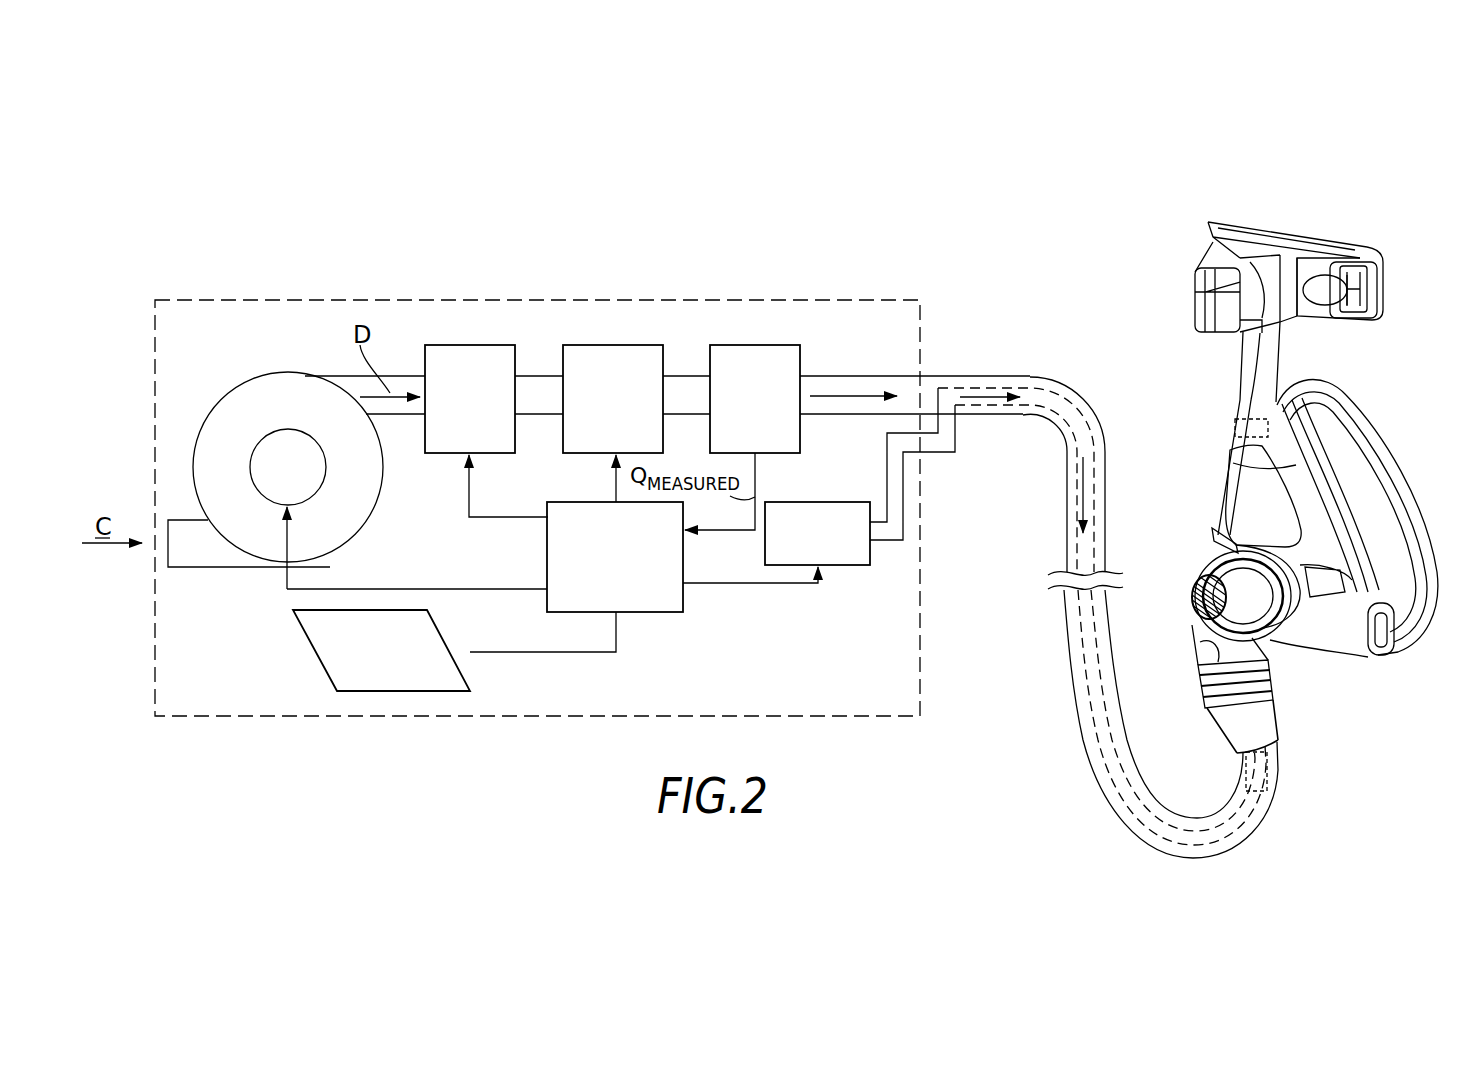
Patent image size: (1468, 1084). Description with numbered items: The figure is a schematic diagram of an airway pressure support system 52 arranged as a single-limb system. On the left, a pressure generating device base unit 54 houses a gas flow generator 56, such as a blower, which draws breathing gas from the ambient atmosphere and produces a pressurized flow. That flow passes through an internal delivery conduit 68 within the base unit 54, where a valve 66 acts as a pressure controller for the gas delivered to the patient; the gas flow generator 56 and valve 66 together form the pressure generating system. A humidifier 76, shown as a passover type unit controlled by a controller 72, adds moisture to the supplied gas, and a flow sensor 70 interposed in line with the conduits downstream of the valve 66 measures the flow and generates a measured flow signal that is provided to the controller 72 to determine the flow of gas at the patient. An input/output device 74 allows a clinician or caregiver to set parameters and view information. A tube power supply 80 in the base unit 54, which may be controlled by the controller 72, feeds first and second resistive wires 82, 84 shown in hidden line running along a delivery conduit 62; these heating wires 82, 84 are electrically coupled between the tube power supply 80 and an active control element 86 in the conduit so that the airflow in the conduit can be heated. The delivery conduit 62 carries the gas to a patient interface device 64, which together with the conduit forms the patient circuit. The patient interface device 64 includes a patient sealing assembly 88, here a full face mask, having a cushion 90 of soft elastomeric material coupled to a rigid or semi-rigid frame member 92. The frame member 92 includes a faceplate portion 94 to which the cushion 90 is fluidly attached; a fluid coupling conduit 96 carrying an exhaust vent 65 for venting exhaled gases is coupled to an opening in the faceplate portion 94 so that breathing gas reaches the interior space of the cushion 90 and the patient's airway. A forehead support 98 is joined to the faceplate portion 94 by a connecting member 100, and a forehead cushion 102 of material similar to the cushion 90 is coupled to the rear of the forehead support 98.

The airway pressure support system 52 is at (803, 237).
The pressure generating device base unit 54 is at (582, 300).
The gas flow generator 56 is at (240, 385).
The delivery conduit 62 is at (1020, 375).
The patient interface device 64 is at (1178, 290).
The exhaust vent 65 is at (1180, 592).
The valve 66 is at (483, 410).
The internal delivery conduit 68 is at (863, 373).
The flow sensor 70 is at (768, 410).
The controller 72 is at (628, 562).
The input/output device 74 is at (388, 660).
The humidifier 76 is at (626, 410).
The tube power supply 80 is at (831, 544).
The first resistive wire 82 is at (1080, 388).
The second resistive wire 84 is at (1047, 433).
The active control element 86 is at (1267, 767).
The patient sealing assembly 88 is at (1360, 675).
The cushion 90 is at (1383, 470).
The frame member 92 is at (1237, 427).
The faceplate portion 94 is at (1327, 555).
The fluid coupling conduit 96 is at (1240, 633).
The forehead support 98 is at (1293, 237).
The connecting member 100 is at (1267, 362).
The forehead cushion 102 is at (1373, 248).